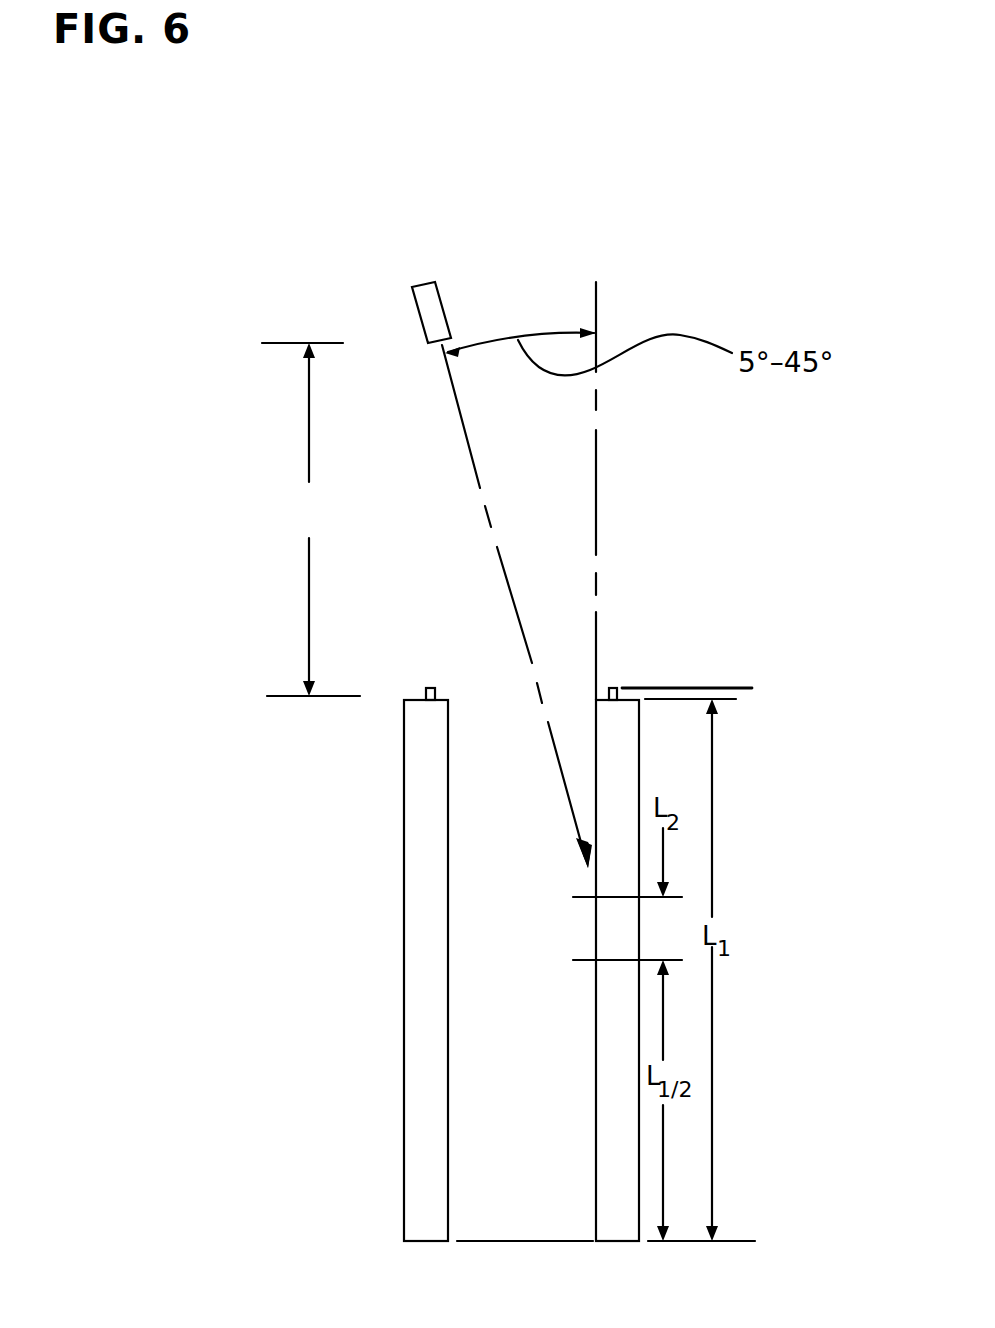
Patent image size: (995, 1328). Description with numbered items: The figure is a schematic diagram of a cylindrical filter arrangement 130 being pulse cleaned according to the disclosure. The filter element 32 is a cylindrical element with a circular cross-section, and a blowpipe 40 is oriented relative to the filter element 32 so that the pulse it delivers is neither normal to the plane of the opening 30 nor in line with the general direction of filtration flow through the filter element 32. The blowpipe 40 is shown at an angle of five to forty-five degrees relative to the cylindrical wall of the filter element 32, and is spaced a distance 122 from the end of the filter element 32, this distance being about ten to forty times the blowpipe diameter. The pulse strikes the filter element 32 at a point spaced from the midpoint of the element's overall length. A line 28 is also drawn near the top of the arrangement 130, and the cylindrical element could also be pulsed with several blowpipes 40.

The liquid level 28 is at (706, 663).
The opening 30 is at (588, 682).
The filter element 32 is at (423, 988).
The blowpipe 40 is at (438, 303).
The distance 122 is at (311, 519).
The cylindrical filter arrangement 130 is at (278, 887).